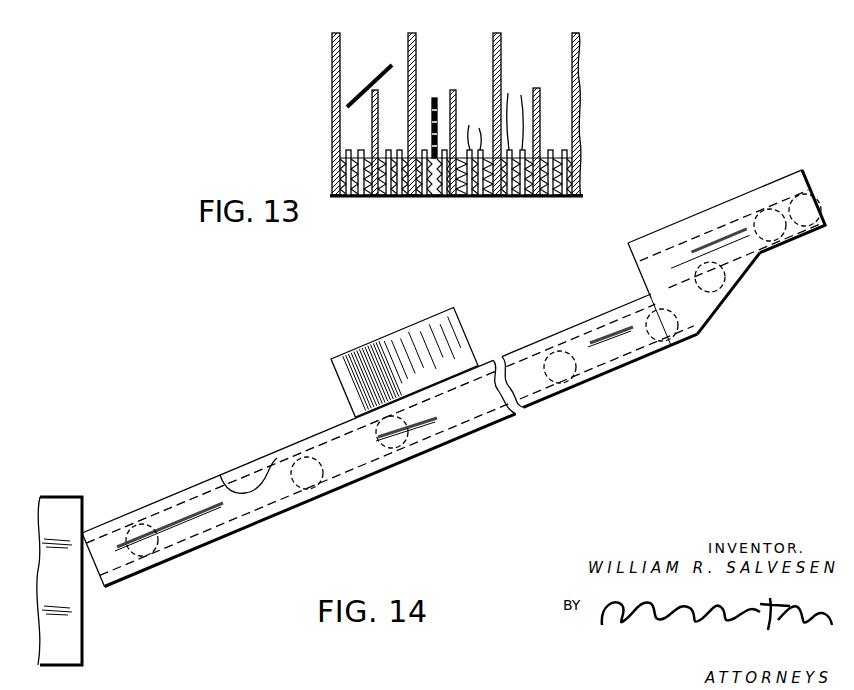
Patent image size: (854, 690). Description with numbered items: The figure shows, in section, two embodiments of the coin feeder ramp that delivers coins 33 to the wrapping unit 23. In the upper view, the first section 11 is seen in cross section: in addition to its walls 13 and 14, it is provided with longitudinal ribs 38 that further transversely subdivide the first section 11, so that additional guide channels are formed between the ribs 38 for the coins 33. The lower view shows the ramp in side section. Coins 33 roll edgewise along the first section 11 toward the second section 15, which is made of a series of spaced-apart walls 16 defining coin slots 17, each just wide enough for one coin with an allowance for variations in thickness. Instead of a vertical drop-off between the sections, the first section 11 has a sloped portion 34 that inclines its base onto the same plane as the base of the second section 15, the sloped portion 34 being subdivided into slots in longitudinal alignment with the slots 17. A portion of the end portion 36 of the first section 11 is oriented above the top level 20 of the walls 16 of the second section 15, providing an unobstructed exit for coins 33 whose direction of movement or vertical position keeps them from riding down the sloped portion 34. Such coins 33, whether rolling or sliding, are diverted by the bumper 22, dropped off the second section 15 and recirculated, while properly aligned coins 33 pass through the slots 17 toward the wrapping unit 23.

In FIG. 13, the first section 11 is at (630, 41).
In FIG. 14, the first section 11 is at (746, 302).
In FIG. 13, the wall 13 is at (411, 40).
In FIG. 13, the wall 14 is at (379, 114).
In FIG. 14, the second section 15 is at (228, 556).
In FIG. 14, the walls 16 is at (186, 491).
In FIG. 14, the coin slot 17 is at (248, 483).
In FIG. 14, the top level 20 is at (308, 440).
In FIG. 14, the bumper 22 is at (338, 358).
In FIG. 14, the wrapping unit 23 is at (54, 500).
In FIG. 13, the coins 33 is at (372, 80).
In FIG. 14, the coins 33 is at (663, 350).
In FIG. 14, the sloped portion 34 is at (718, 310).
In FIG. 14, the end portion 36 is at (640, 272).
In FIG. 13, the longitudinal ribs 38 is at (598, 126).